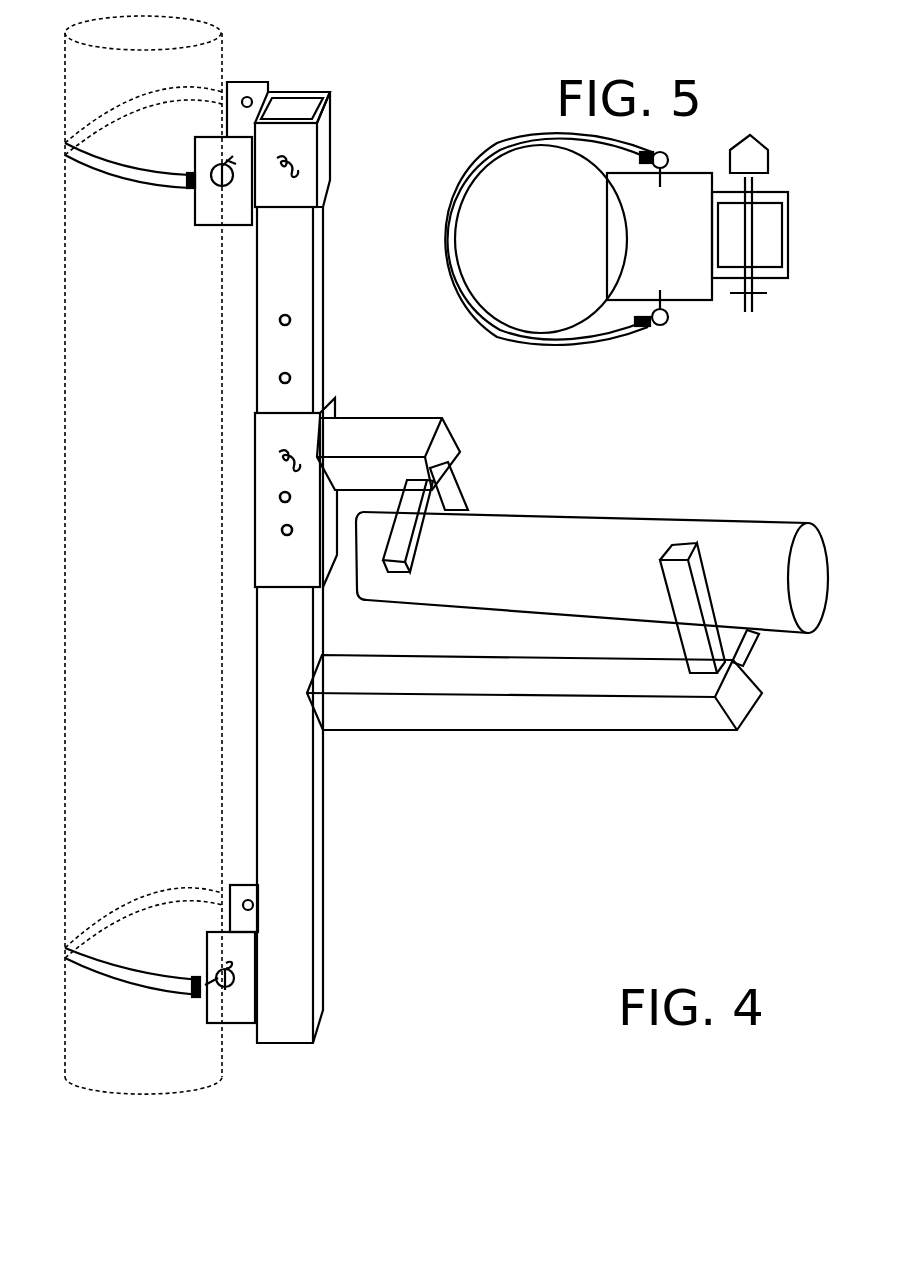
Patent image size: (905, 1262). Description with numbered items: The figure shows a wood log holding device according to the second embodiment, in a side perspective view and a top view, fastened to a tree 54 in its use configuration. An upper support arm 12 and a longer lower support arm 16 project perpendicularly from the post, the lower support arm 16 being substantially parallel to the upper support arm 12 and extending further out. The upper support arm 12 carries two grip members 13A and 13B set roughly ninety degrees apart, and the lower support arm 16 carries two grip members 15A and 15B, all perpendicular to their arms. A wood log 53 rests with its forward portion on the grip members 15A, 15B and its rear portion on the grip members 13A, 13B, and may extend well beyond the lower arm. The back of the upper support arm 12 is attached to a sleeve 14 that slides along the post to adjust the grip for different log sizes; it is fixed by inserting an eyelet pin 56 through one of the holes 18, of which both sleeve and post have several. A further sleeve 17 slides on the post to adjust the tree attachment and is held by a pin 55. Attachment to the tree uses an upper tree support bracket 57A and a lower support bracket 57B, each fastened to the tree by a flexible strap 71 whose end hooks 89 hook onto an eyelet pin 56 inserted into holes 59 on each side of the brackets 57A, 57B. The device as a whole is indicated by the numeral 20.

In FIG. 4, the upper support arm 12 is at (413, 437).
In FIG. 4, the grip member 13A is at (457, 487).
In FIG. 4, the grip member 13B is at (415, 533).
In FIG. 4, the sleeve 14 is at (328, 410).
In FIG. 4, the grip member 15A is at (740, 642).
In FIG. 4, the grip member 15B is at (703, 677).
In FIG. 4, the lower support arm 16 is at (573, 705).
In FIG. 4, the sleeve 17 is at (322, 132).
In FIG. 5, the sleeve 17 is at (770, 282).
In FIG. 4, the holes 18 is at (291, 320).
In FIG. 5, the mounting assembly 20 is at (498, 125).
In FIG. 4, the wood log 53 is at (745, 555).
In FIG. 4, the tree 54 is at (190, 66).
In FIG. 5, the pin 55 is at (738, 150).
In FIG. 4, the eyelet pin 56 is at (290, 167).
In FIG. 5, the eyelet pin 56 is at (660, 327).
In FIG. 4, the upper tree support bracket 57A is at (233, 213).
In FIG. 4, the lower support bracket 57B is at (240, 1003).
In FIG. 4, the holes 59 is at (247, 910).
In FIG. 4, the flexible strap 71 is at (113, 167).
In FIG. 5, the flexible strap 71 is at (546, 338).
In FIG. 4, the hooks 89 is at (217, 987).